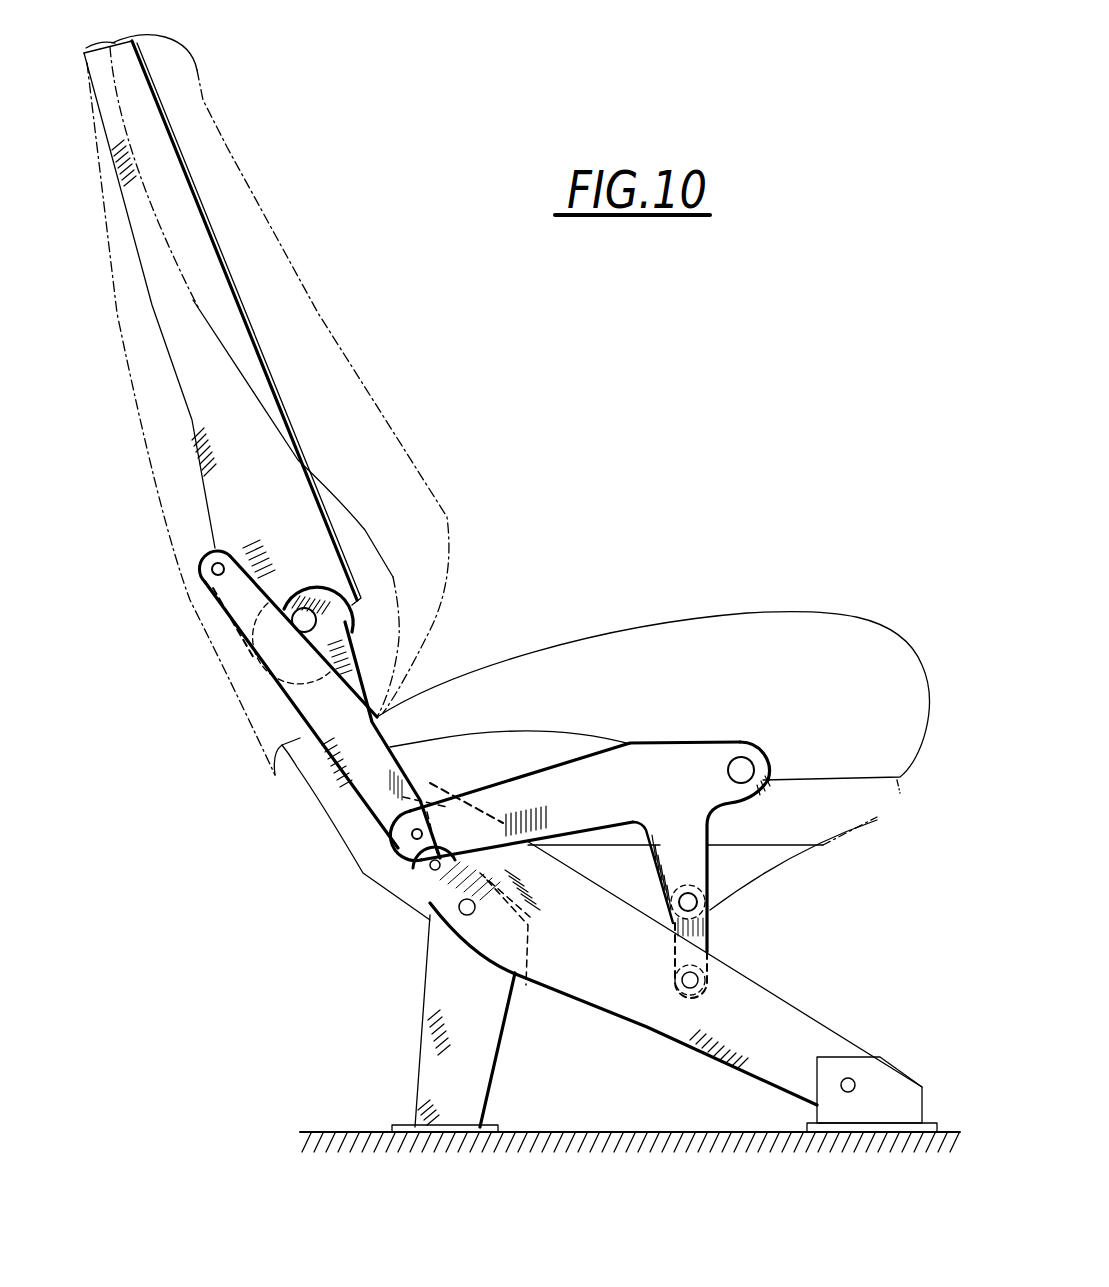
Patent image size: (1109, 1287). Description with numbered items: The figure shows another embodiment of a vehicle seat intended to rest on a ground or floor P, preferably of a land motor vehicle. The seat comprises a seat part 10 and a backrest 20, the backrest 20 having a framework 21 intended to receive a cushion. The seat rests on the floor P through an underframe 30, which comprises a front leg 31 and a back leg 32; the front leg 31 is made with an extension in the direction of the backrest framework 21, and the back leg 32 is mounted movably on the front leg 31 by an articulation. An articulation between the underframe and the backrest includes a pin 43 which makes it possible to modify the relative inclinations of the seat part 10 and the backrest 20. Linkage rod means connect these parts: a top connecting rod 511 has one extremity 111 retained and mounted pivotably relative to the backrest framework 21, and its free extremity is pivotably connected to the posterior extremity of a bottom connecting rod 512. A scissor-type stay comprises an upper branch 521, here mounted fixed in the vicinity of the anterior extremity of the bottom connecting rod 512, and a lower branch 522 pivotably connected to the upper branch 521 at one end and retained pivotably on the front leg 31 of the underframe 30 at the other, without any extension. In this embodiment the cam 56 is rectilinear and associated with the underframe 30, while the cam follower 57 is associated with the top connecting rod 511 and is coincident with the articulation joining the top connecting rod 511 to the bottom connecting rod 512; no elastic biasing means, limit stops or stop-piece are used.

The seat part 10 is at (727, 600).
The backrest 20 is at (310, 253).
The framework of the backrest 21 is at (243, 353).
The underframe 30 is at (407, 1030).
The front leg 31 is at (817, 1044).
The back leg 32 is at (478, 1067).
The pin 43 is at (350, 613).
The cam 56 is at (426, 868).
The cam follower 57 is at (403, 843).
The extremity of the top connecting rod 111 is at (743, 763).
The top connecting rod 511 is at (297, 692).
The bottom connecting rod 512 is at (558, 777).
The upper branch 521 is at (693, 835).
The lower branch 522 is at (690, 931).
The floor P is at (343, 1135).